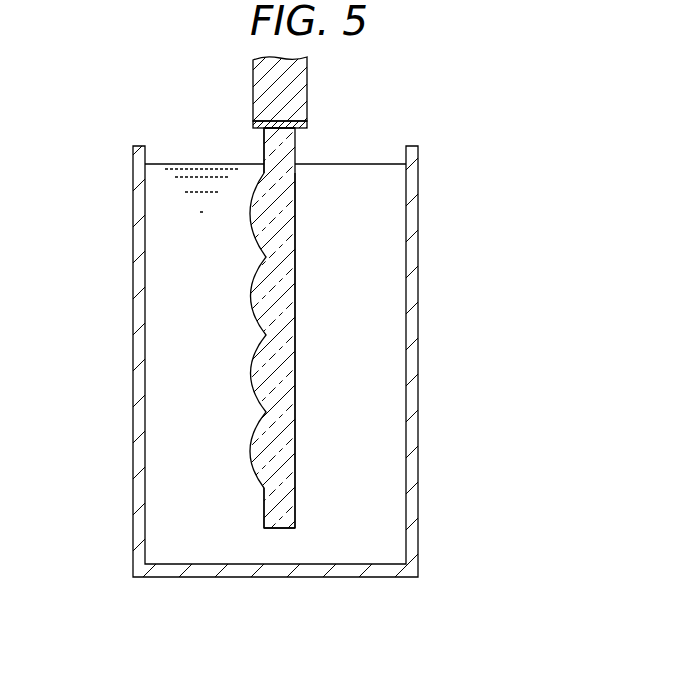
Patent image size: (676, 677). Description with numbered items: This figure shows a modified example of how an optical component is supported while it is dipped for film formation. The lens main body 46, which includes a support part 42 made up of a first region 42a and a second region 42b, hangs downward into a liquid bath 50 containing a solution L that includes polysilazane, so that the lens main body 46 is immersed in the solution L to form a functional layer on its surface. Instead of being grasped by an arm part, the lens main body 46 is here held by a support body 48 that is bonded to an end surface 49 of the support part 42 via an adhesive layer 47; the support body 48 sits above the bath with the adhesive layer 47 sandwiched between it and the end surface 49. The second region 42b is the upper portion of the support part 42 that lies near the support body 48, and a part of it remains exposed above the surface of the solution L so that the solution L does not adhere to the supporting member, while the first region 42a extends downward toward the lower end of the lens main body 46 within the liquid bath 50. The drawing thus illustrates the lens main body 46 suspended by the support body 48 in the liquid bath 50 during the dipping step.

The support part 42 is at (389, 318).
The first region 42a is at (287, 507).
The second region 42b is at (294, 172).
The lens main body 46 is at (296, 212).
The adhesive layer 47 is at (306, 126).
The support body 48 is at (265, 80).
The end surface 49 is at (272, 126).
The liquid bath 50 is at (419, 380).
The solution L is at (157, 187).